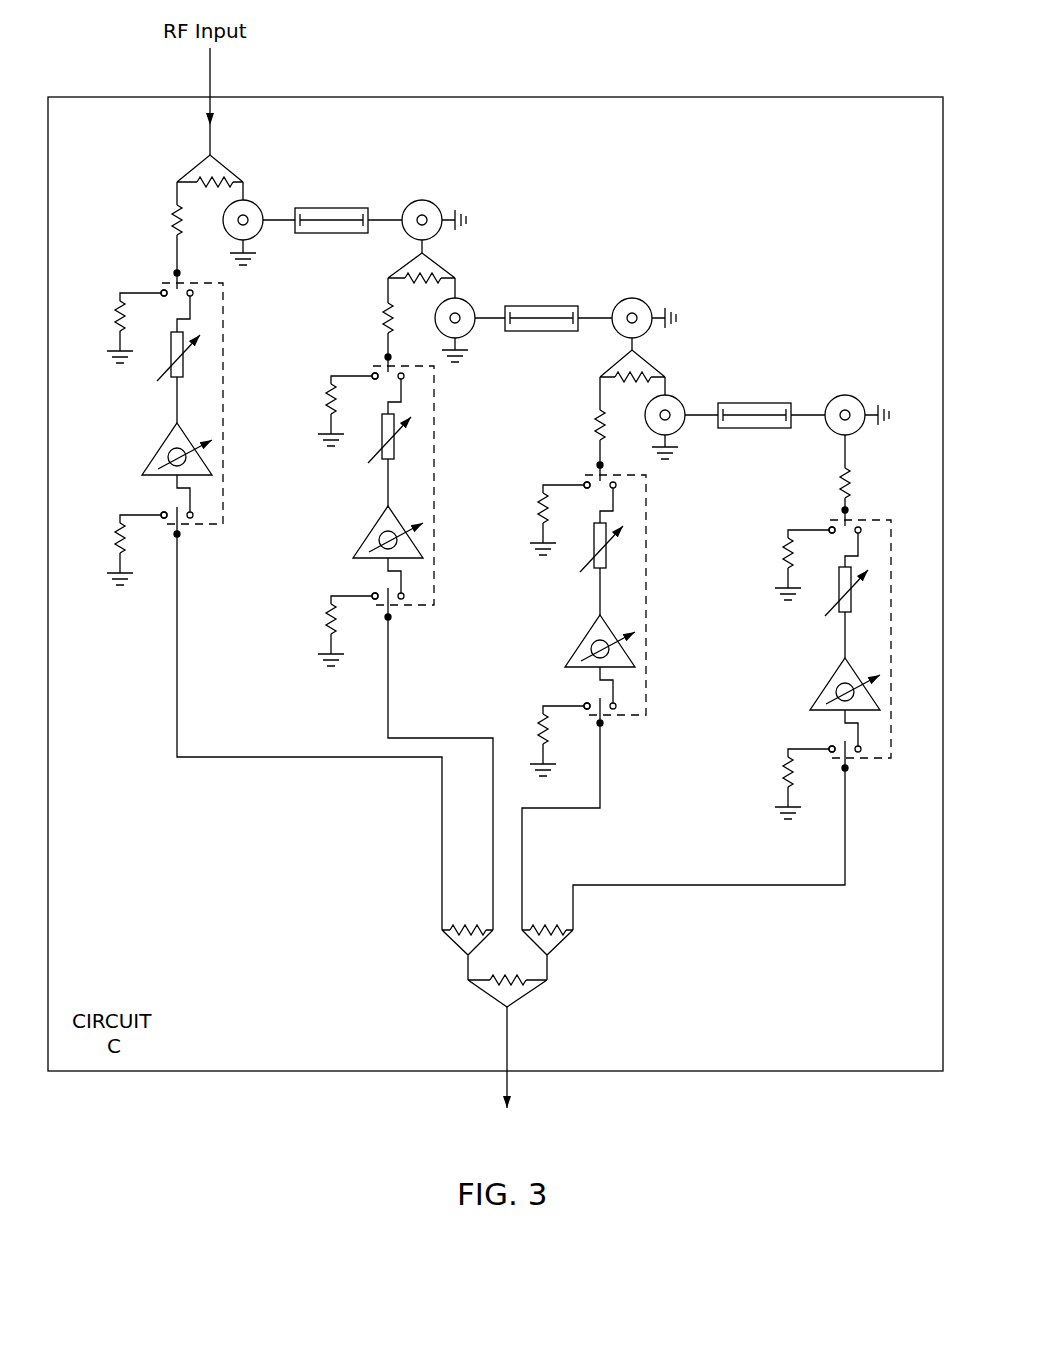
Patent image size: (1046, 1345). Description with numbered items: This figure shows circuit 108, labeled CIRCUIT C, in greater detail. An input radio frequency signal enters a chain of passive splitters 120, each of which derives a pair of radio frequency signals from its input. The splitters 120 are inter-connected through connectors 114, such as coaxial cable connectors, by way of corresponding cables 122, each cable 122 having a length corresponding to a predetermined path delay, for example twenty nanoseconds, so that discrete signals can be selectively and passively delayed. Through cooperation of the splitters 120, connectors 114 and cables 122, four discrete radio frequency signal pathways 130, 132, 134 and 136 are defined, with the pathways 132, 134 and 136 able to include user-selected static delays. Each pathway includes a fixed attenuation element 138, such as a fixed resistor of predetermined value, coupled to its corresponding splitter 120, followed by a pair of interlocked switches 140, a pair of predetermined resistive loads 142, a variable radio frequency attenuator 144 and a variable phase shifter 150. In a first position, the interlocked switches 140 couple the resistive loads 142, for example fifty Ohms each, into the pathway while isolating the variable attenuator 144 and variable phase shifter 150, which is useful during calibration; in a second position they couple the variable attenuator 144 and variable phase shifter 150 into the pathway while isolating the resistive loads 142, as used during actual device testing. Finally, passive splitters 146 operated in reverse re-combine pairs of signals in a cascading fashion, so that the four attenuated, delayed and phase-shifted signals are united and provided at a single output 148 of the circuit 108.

The circuit 108 is at (495, 97).
The connector 114 is at (420, 200).
The passive splitter 120 is at (232, 152).
The cable 122 is at (302, 208).
The radio frequency signal pathway 130 is at (167, 620).
The radio frequency signal pathway 132 is at (371, 680).
The radio frequency signal pathway 134 is at (620, 793).
The radio frequency signal pathway 136 is at (866, 818).
The fixed attenuation element 138 is at (177, 213).
The interlocked switches 140 is at (224, 357).
The resistive load 142 is at (117, 320).
The variable radio frequency attenuator 144 is at (170, 376).
The passive splitter 146 is at (440, 955).
The output 148 is at (505, 1043).
The variable phase shifter 150 is at (155, 455).